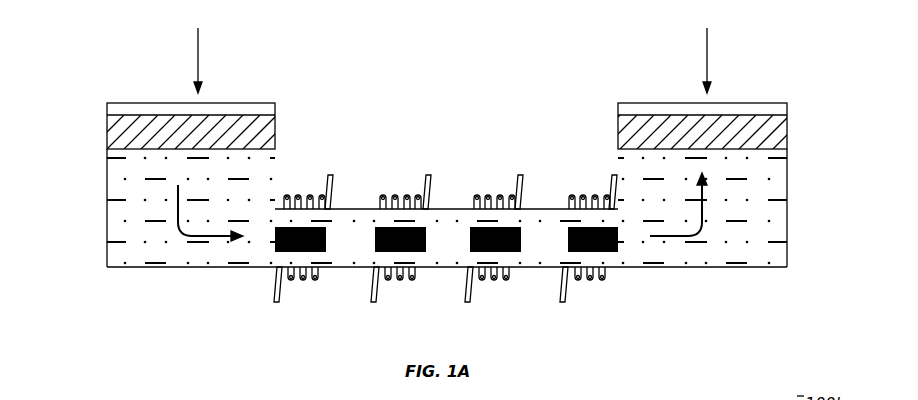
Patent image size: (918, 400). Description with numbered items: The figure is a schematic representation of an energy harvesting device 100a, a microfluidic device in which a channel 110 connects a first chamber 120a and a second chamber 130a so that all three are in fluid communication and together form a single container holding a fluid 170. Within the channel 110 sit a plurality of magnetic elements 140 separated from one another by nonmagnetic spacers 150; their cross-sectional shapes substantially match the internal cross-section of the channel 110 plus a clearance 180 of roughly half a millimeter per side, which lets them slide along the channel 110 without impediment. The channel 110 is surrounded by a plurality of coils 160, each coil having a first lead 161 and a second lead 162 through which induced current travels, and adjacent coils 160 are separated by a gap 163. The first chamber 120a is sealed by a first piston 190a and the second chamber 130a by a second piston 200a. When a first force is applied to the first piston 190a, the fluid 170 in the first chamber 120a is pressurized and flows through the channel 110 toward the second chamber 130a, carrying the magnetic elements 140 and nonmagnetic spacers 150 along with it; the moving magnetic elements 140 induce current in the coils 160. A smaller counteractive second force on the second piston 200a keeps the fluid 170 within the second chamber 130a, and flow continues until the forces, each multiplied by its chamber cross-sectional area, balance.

The energy harvesting device 100a is at (445, 183).
The channel 110 is at (462, 208).
The first chamber 120a is at (107, 193).
The second chamber 130a is at (787, 207).
The magnetic elements 140 is at (562, 254).
The nonmagnetic spacers 150 is at (562, 254).
The coils 160 is at (345, 160).
The first lead 161 is at (278, 300).
The second lead 162 is at (333, 184).
The gap 163 is at (352, 268).
The fluid 170 is at (133, 258).
The clearance 180 is at (280, 260).
The first piston 190a is at (115, 130).
The second piston 200a is at (781, 131).